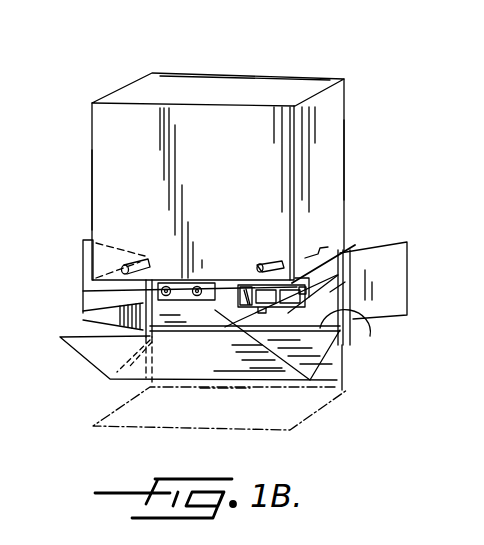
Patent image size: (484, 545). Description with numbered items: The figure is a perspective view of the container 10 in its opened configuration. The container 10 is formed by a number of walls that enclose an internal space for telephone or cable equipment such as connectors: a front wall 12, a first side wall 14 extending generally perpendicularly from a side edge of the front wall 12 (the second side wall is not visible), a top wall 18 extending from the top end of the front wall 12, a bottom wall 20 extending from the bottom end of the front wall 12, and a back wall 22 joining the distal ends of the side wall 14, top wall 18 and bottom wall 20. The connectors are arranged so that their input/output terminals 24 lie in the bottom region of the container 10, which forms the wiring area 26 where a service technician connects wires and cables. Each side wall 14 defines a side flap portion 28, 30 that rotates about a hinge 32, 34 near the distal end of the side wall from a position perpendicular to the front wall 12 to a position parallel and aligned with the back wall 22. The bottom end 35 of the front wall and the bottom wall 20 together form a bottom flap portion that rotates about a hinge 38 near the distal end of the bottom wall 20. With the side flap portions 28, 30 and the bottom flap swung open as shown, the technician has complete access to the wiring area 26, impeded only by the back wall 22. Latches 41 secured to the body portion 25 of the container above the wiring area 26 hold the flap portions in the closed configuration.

The container 10 is at (360, 67).
The front wall 12 is at (92, 137).
The first side wall 14 is at (335, 116).
The top wall 18 is at (236, 80).
The bottom wall 20 is at (345, 393).
The back wall 22 is at (150, 334).
The input/output terminals 24 is at (168, 317).
The body portion 25 is at (115, 163).
The wiring area 26 is at (318, 308).
The side flap portion 28 is at (382, 258).
The side flap portion 30 is at (82, 289).
The hinge 32 is at (352, 250).
The hinge 34 is at (83, 310).
The bottom end of the front wall 35 is at (258, 385).
The hinge 38 is at (363, 329).
The latches 41 is at (314, 253).